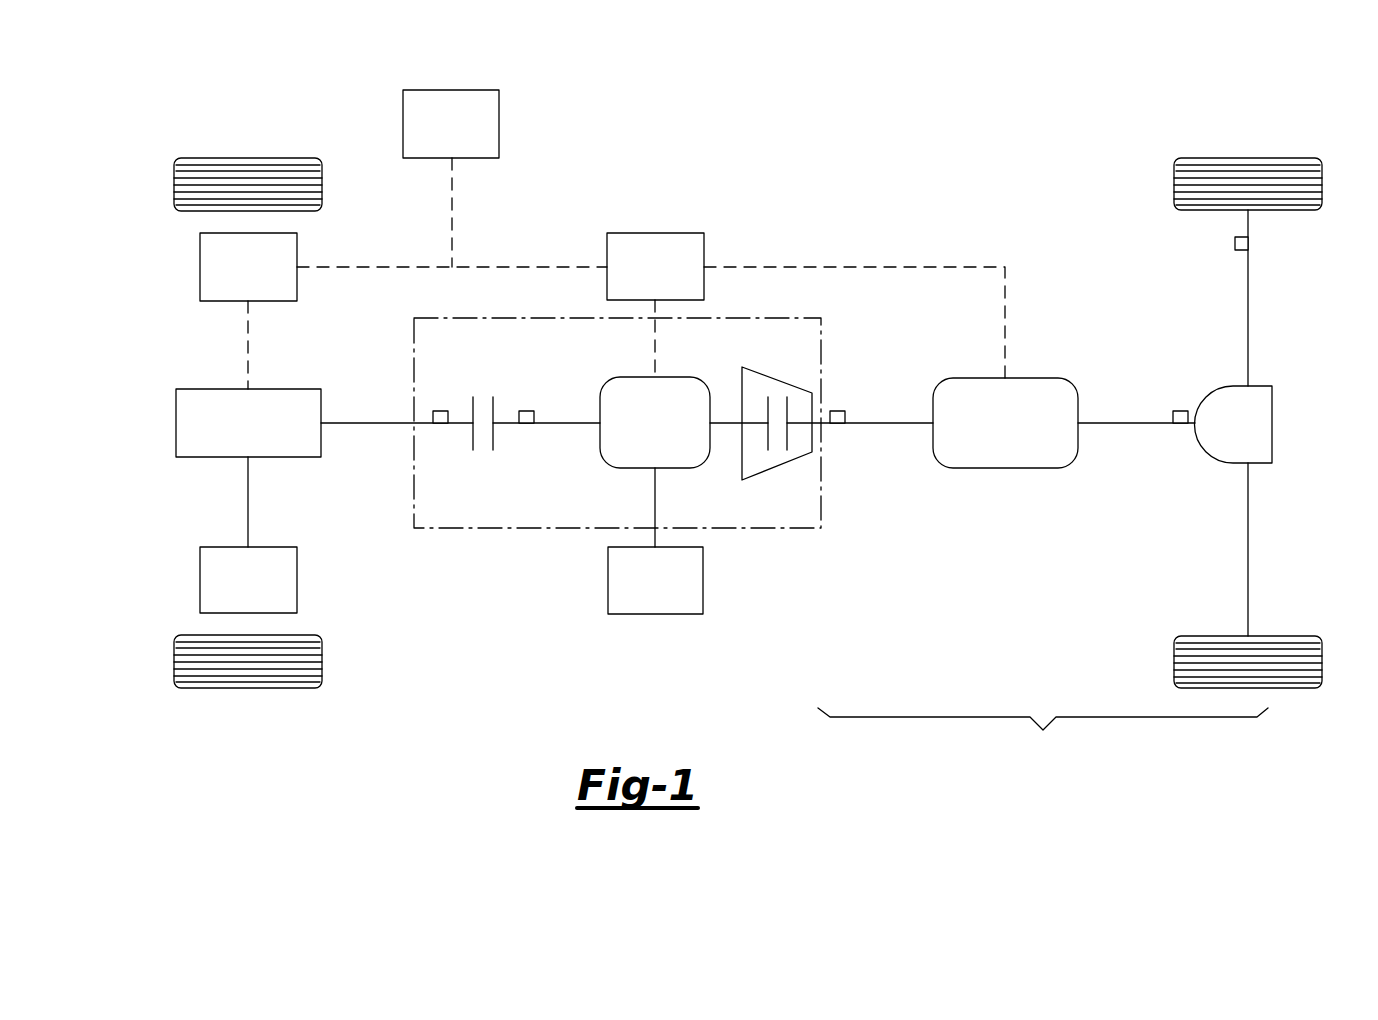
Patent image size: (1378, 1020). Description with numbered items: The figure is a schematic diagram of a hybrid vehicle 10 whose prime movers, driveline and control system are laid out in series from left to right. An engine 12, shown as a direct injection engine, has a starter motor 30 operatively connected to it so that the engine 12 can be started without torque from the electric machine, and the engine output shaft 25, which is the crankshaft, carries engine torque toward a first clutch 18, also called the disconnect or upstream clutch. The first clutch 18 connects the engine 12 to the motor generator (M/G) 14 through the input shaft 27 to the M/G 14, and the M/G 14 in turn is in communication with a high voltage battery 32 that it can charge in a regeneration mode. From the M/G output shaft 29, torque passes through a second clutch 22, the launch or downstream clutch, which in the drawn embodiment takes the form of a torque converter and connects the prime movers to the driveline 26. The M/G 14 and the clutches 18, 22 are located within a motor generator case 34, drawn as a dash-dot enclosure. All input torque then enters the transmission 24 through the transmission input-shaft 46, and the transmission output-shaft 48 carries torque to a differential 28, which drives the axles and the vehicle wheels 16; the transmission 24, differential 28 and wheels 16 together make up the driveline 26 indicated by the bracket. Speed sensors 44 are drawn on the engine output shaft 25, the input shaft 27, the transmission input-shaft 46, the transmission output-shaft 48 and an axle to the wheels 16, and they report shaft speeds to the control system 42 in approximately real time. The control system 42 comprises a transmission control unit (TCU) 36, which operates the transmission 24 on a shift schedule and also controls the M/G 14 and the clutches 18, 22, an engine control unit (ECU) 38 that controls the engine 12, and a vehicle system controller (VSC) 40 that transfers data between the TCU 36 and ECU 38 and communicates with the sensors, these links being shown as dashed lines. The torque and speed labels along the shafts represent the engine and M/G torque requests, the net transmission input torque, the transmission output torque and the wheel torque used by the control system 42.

The hybrid vehicle 10 is at (947, 160).
The engine 12 is at (176, 423).
The motor generator (M/G) 14 is at (639, 377).
The vehicle wheels 16 is at (1248, 158).
The first clutch (disconnect clutch) 18 is at (473, 446).
The second clutch (launch clutch) 22 is at (790, 445).
The transmission 24 is at (1005, 468).
The engine output shaft 25 is at (337, 428).
The driveline 26 is at (1043, 736).
The input shaft to the M/G 27 is at (508, 428).
The differential 28 is at (1272, 423).
The M/G output shaft 29 is at (728, 428).
The starter motor 30 is at (200, 580).
The battery 32 is at (655, 614).
The motor generator case 34 is at (775, 528).
The transmission control unit (TCU) 36 is at (655, 233).
The engine control unit (ECU) 38 is at (200, 268).
The vehicle system controller (VSC) 40 is at (403, 128).
The control system 42 is at (590, 122).
The speed sensors 44 is at (440, 411).
The transmission input-shaft 46 is at (910, 423).
The transmission output-shaft 48 is at (1160, 428).